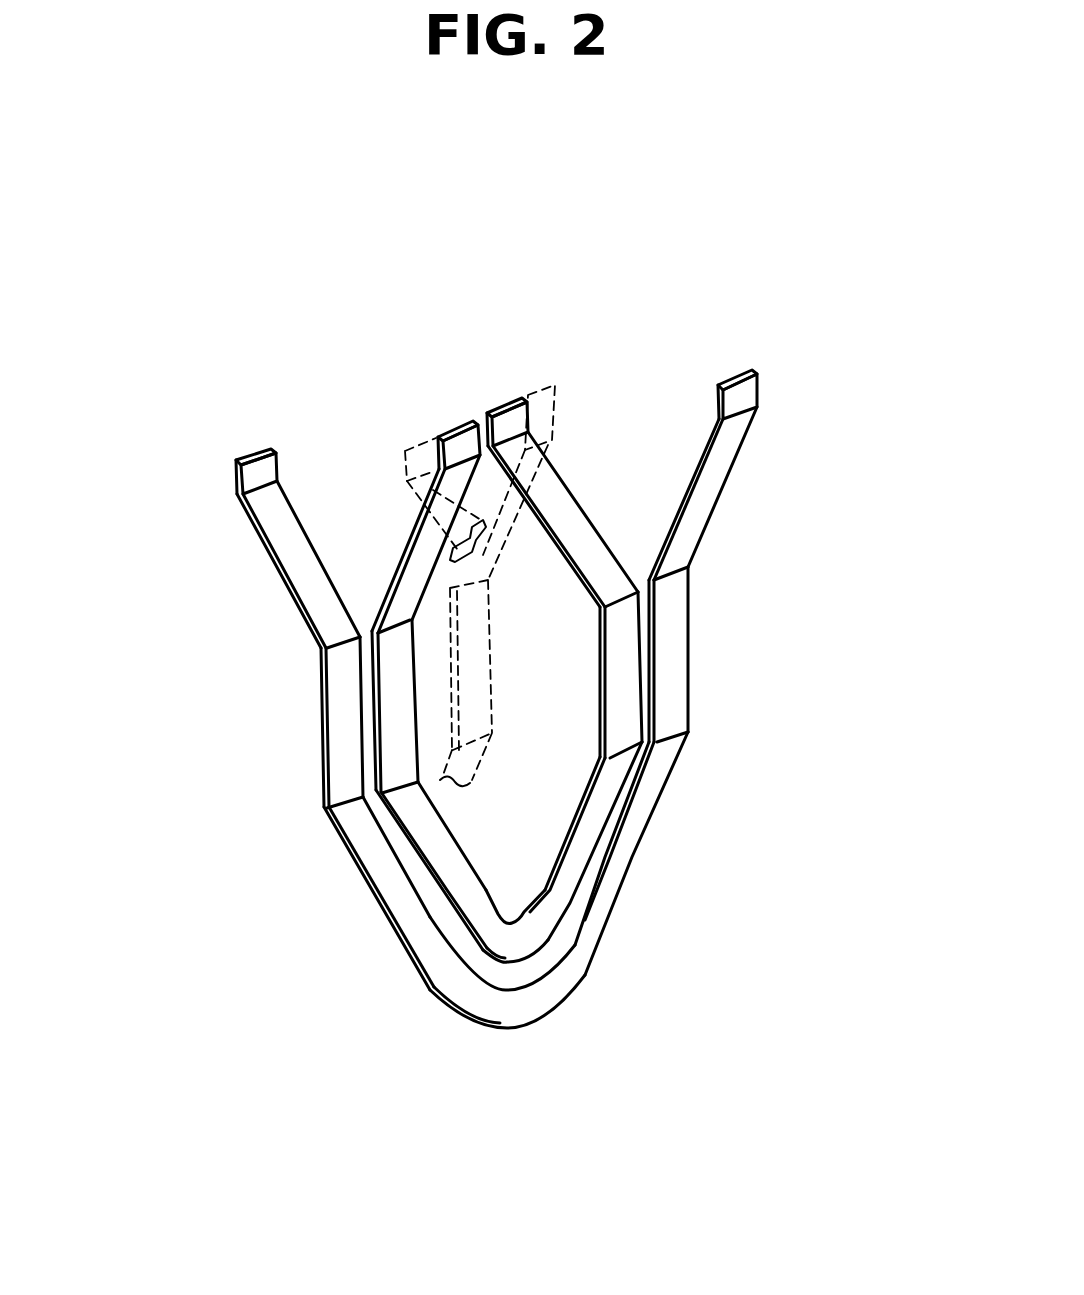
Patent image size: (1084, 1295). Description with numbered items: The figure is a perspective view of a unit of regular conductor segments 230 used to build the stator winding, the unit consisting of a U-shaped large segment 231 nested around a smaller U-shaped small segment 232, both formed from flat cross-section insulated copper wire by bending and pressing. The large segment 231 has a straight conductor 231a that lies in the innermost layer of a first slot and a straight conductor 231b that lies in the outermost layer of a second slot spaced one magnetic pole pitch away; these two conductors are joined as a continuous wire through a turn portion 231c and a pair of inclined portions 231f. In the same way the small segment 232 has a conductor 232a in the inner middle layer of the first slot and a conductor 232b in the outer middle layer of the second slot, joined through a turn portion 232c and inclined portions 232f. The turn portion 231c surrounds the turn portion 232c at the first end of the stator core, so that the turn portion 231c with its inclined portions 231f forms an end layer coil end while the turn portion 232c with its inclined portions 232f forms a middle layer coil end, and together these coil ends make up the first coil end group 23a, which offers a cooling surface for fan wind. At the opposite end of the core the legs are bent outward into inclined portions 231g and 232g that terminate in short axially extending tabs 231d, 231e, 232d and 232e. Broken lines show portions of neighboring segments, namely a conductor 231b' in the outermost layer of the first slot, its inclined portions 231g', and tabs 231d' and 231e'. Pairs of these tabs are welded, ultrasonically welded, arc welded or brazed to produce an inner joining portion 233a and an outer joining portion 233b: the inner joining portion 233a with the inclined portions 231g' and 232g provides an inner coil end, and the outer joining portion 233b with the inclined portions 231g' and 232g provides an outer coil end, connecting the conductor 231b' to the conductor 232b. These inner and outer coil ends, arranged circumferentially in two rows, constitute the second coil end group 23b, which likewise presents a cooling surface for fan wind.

The segments 230 is at (427, 997).
The large segments 231 is at (722, 498).
The small segments 232 is at (620, 528).
The conductor 231a is at (342, 682).
The conductor 231b is at (780, 654).
The turn portion 231c is at (503, 1010).
The tab 231d is at (173, 498).
The tab 231e is at (829, 356).
The inclined portions 231f is at (378, 877).
The inclined portions 231g is at (506, 515).
The tab 231d' is at (337, 408).
The tab 231e' is at (609, 381).
The inclined portions 231g' is at (649, 515).
The conductor 231b' is at (666, 683).
The conductor 232a is at (403, 740).
The conductor 232b is at (627, 732).
The turn portion 232c is at (512, 945).
The tab 232d is at (455, 413).
The tab 232e is at (510, 400).
The inclined portions 232f is at (580, 845).
The inclined portions 232g is at (420, 573).
The inner joining portion 233a is at (425, 403).
The outer joining portion 233b is at (532, 362).
The first coil end group 23a is at (368, 937).
The second coil end group 23b is at (260, 566).